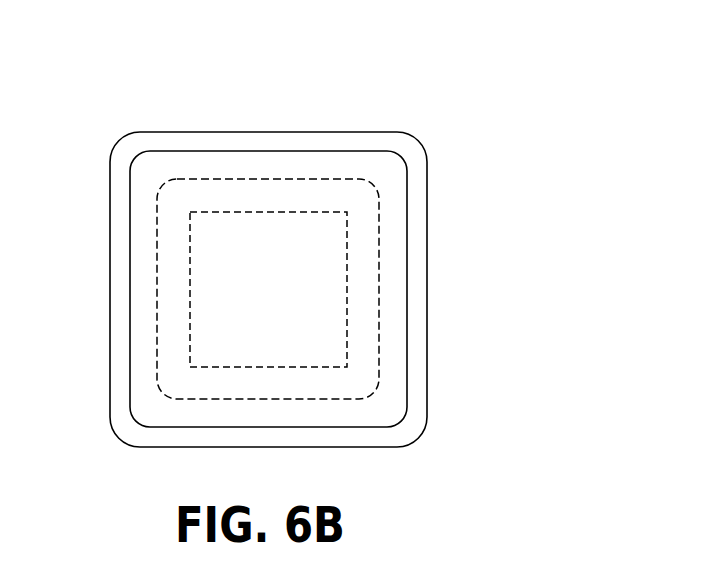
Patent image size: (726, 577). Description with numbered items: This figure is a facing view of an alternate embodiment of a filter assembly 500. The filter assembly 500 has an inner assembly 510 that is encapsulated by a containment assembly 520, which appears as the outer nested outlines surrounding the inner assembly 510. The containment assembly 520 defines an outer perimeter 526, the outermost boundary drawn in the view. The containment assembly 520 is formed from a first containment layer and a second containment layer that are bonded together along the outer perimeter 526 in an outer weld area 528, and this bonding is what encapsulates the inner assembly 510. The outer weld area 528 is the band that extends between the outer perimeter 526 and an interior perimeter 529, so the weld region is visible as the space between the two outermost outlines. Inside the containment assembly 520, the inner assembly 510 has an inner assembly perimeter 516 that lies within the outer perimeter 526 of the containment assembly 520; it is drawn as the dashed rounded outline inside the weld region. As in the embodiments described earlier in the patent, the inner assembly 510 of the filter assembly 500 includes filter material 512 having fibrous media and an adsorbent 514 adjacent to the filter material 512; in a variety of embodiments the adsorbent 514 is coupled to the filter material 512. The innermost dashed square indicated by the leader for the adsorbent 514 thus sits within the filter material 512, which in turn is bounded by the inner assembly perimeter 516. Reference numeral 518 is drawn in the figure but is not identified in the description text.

The filter assembly 500 is at (210, 68).
The inner assembly 510 is at (383, 232).
The filter material 512 is at (325, 197).
The adsorbent 514 is at (328, 285).
The inner assembly perimeter 516 is at (238, 180).
The inactive border region 518 is at (208, 193).
The containment assembly 520 is at (427, 343).
The outer perimeter 526 is at (427, 372).
The outer weld area 528 is at (390, 433).
The interior perimeter 529 is at (130, 382).